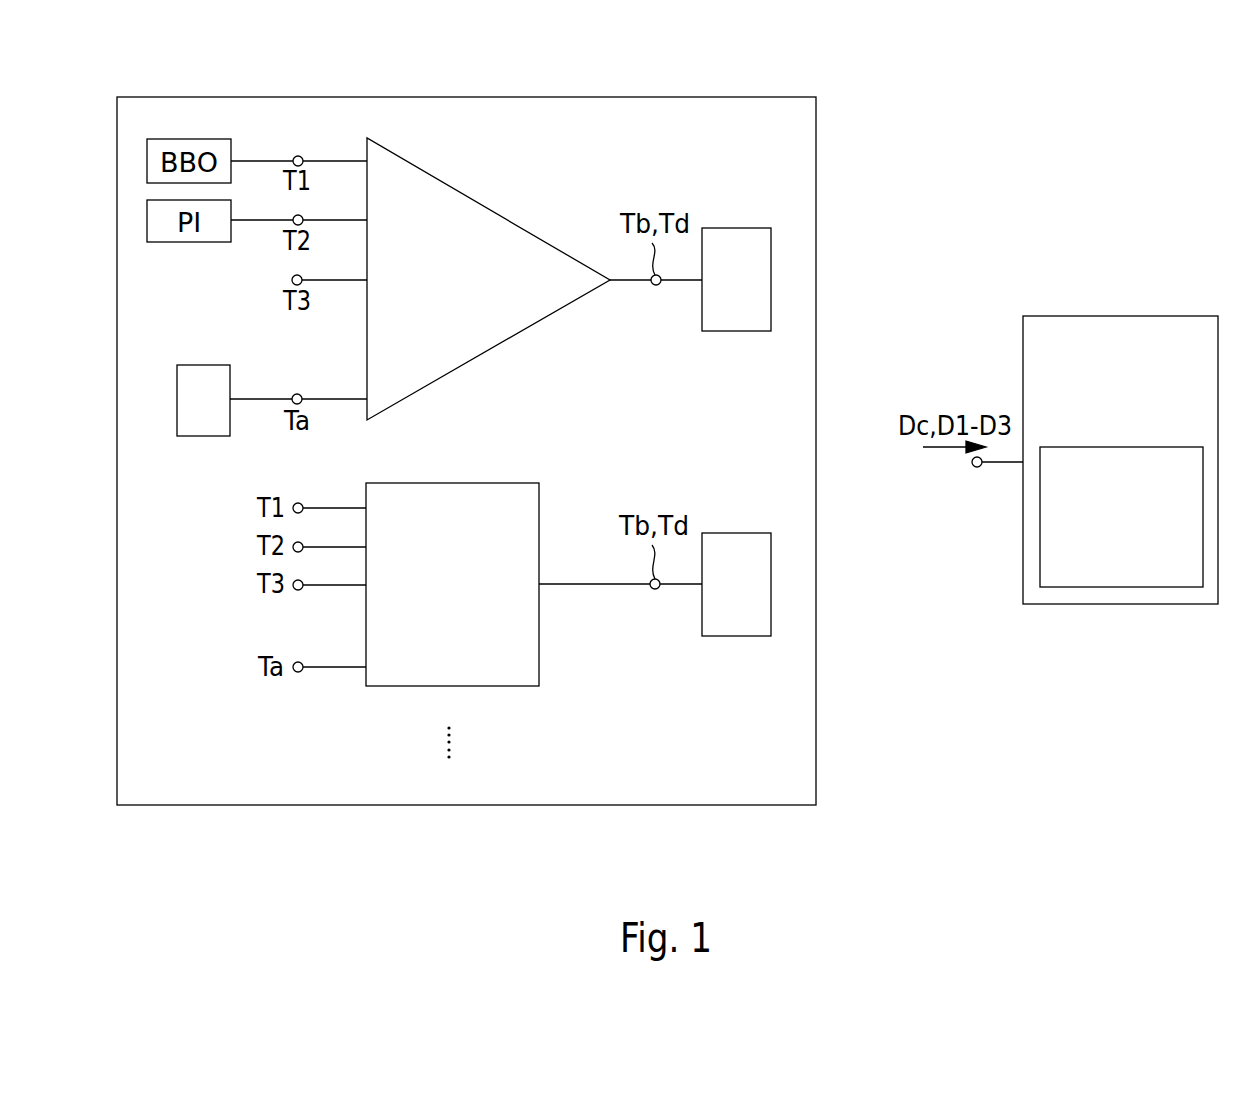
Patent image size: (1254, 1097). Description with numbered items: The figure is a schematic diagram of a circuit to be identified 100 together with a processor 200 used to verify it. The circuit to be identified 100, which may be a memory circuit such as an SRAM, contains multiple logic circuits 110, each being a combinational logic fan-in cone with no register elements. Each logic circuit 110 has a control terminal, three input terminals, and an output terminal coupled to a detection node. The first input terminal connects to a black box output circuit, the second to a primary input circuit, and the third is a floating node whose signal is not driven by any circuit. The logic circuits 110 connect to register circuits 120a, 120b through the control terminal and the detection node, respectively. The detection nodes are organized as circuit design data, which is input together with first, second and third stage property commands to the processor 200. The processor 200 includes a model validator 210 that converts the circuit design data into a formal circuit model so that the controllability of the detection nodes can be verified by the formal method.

The circuit to be identified 100 is at (791, 97).
The logic circuit 110 is at (425, 310).
The register circuit 120a is at (204, 365).
The register circuit 120b is at (737, 228).
The processor 200 is at (1144, 411).
The model validator 210 is at (1144, 561).